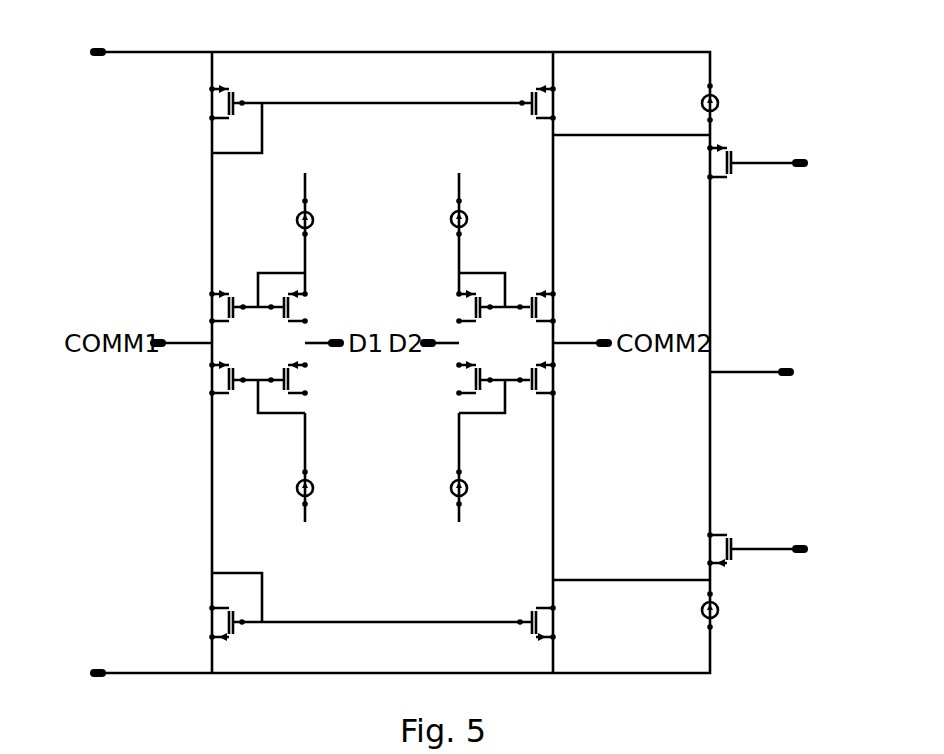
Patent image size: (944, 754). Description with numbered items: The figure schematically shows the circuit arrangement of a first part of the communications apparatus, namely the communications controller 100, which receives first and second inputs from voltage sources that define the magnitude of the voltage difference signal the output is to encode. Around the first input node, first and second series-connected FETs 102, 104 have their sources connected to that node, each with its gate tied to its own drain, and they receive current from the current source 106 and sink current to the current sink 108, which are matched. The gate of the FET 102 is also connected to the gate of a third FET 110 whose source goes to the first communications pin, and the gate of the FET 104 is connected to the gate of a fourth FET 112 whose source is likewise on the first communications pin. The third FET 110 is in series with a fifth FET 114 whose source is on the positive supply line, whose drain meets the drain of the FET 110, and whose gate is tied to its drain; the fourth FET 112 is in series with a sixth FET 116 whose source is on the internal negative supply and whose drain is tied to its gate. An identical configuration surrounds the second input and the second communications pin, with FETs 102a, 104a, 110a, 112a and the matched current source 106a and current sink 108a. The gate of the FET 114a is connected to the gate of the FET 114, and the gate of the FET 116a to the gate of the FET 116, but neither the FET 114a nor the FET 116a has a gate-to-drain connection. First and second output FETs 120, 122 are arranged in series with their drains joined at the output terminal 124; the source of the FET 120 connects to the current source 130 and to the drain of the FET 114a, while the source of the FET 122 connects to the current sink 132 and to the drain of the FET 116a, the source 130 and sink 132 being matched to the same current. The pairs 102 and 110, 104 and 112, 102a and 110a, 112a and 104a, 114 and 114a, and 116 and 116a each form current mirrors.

The communications controller 100 is at (433, 44).
The first FET 102 is at (305, 307).
The first FET of the D2 circuit 102a is at (452, 307).
The second FET 104 is at (305, 380).
The second FET of the D2 circuit 104a is at (452, 381).
The current source 106 is at (313, 221).
The current source of the D2 circuit 106a is at (505, 207).
The current sink 108 is at (313, 490).
The current sink of the D2 circuit 108a is at (467, 489).
The third FET 110 is at (205, 306).
The third FET of the D2 circuit 110a is at (557, 307).
The fourth FET 112 is at (205, 380).
The fourth FET of the D2 circuit 112a is at (557, 381).
The fifth FET 114 is at (205, 102).
The fifth FET of the D2 circuit 114a is at (557, 104).
The sixth FET 116 is at (205, 622).
The sixth FET of the D2 circuit 116a is at (557, 622).
The first output FET 120 is at (704, 163).
The second output FET 122 is at (704, 549).
The output terminal 124 is at (742, 371).
The current source 130 is at (719, 102).
The current sink 132 is at (719, 613).